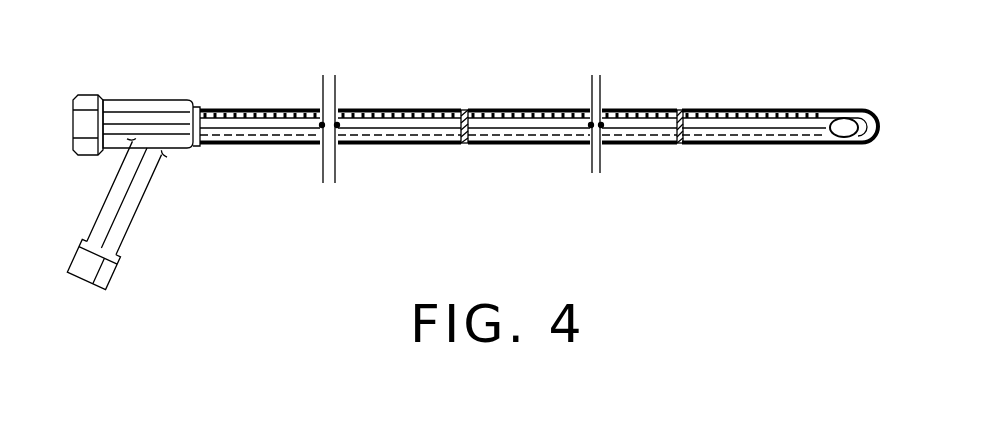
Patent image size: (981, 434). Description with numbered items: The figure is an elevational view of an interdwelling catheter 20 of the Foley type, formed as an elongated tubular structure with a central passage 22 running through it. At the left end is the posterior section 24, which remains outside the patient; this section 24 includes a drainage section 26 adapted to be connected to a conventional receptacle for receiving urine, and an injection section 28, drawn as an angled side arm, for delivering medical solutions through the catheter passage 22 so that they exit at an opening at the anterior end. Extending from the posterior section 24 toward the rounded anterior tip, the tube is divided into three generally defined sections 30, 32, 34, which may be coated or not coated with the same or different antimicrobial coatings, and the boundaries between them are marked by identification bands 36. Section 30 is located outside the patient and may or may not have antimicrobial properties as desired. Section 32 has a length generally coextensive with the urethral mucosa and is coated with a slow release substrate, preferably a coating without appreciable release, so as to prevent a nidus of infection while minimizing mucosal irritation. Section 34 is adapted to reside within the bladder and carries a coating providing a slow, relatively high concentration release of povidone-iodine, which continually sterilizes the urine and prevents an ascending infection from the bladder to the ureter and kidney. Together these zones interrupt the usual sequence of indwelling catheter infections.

The interdwelling catheter 20 is at (425, 71).
The central passage 22 is at (775, 122).
The posterior section 24 is at (255, 125).
The drainage section 26 is at (89, 94).
The injection section 28 is at (122, 213).
The section 30 is at (367, 154).
The section 32 is at (550, 98).
The section 34 is at (778, 95).
The bands 36 is at (465, 144).